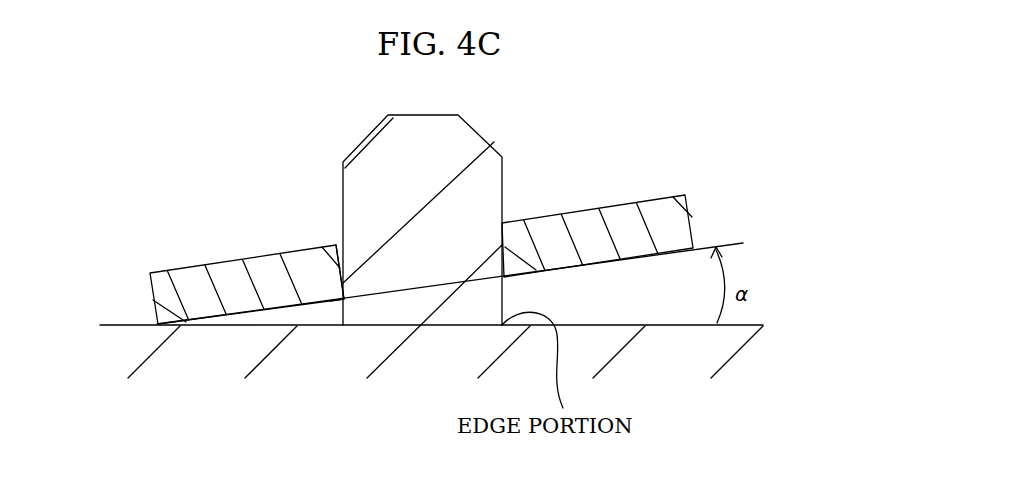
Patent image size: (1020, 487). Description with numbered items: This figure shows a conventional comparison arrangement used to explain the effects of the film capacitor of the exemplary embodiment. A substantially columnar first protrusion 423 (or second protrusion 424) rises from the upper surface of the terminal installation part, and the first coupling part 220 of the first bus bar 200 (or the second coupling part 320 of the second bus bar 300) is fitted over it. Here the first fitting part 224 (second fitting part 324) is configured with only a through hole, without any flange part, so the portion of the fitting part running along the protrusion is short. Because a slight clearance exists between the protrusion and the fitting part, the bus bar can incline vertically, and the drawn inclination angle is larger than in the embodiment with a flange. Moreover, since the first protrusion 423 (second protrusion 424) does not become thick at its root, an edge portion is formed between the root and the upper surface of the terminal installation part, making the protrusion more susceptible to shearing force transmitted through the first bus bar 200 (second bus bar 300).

The first coupling part 220 is at (229, 245).
The second coupling part 320 is at (268, 253).
The first fitting part 224 is at (276, 349).
The second fitting part 324 is at (348, 297).
The first protrusion 423 is at (479, 204).
The second protrusion 424 is at (490, 146).
The first bus bar 200 is at (615, 190).
The second bus bar 300 is at (587, 195).